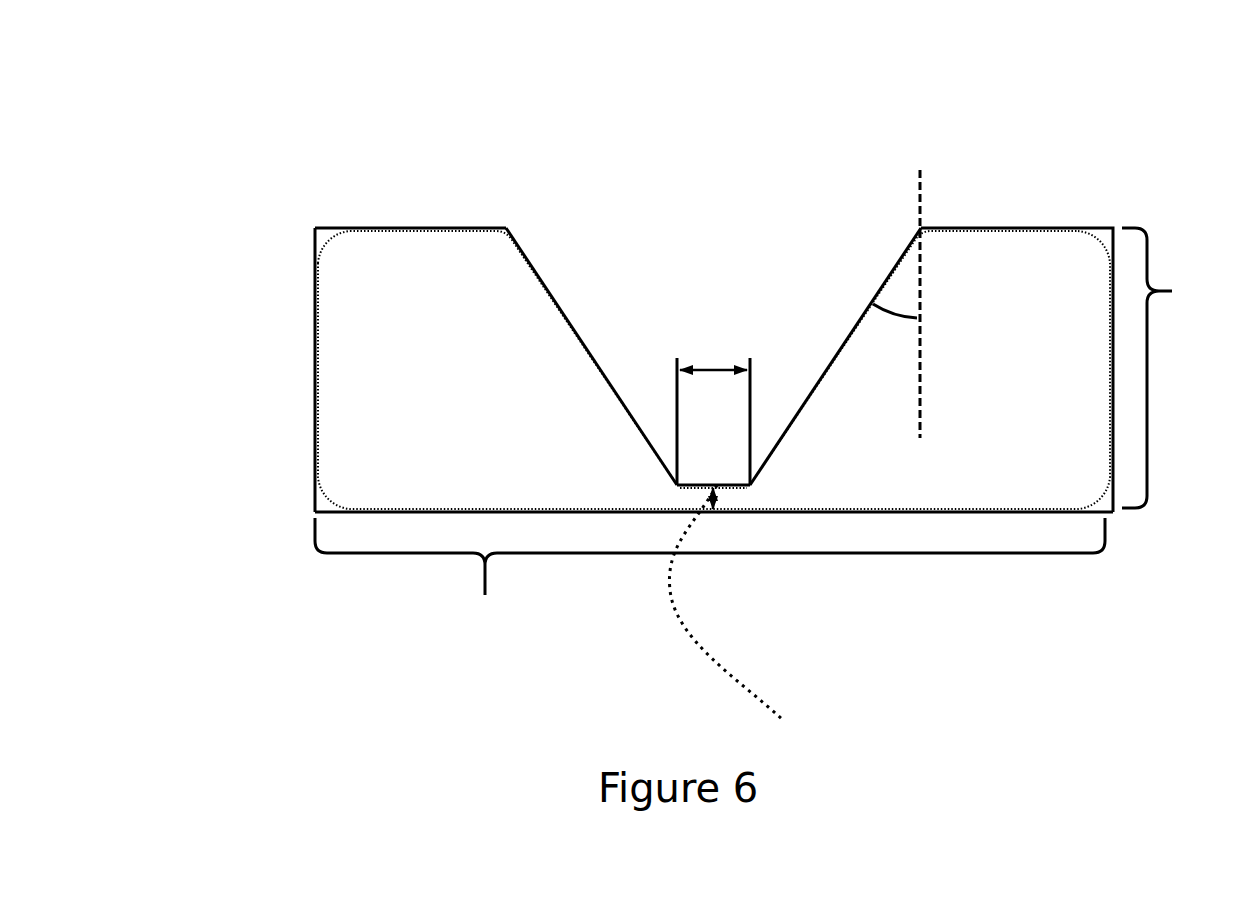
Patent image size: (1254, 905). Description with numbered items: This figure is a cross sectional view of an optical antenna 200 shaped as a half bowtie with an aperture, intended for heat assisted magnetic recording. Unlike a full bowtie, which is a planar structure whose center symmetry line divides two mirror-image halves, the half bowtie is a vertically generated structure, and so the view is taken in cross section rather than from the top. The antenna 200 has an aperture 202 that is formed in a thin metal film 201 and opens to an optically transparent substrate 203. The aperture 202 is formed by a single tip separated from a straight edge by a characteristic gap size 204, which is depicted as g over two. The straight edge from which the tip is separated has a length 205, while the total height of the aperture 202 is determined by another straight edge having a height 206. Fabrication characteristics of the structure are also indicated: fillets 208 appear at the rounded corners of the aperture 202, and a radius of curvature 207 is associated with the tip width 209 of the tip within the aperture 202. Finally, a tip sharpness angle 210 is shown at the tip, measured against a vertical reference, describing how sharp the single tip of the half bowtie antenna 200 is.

The antenna 200 is at (1074, 141).
The thin metal film 201 is at (1183, 661).
The aperture 202 is at (315, 420).
The optically transparent substrate 203 is at (410, 305).
The gap size 204 is at (725, 508).
The length 205 is at (710, 573).
The height 206 is at (1176, 368).
The radius of curvature 207 is at (752, 611).
The fillets 208 is at (332, 497).
The tip width 209 is at (713, 397).
The tip sharpness angle 210 is at (914, 327).